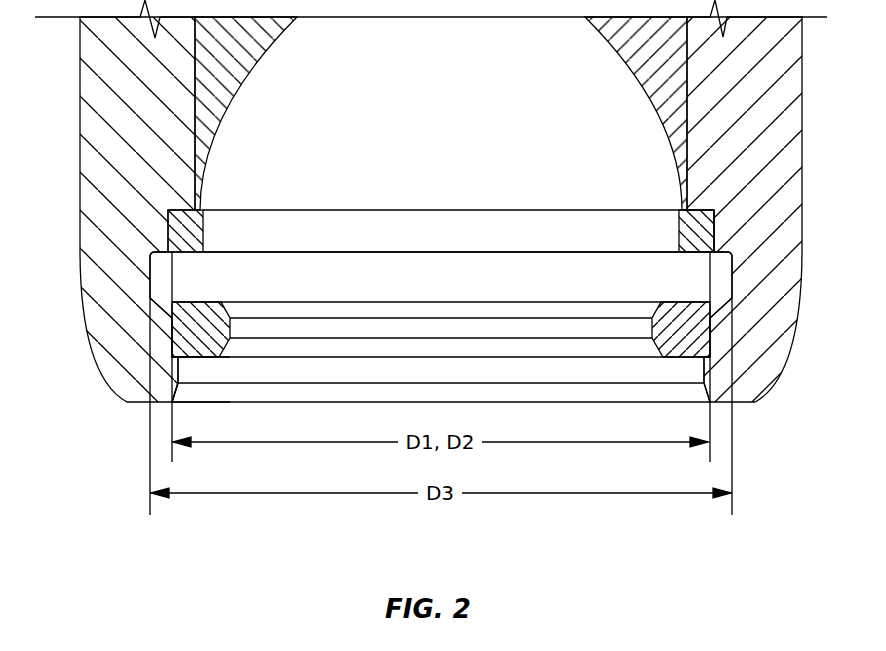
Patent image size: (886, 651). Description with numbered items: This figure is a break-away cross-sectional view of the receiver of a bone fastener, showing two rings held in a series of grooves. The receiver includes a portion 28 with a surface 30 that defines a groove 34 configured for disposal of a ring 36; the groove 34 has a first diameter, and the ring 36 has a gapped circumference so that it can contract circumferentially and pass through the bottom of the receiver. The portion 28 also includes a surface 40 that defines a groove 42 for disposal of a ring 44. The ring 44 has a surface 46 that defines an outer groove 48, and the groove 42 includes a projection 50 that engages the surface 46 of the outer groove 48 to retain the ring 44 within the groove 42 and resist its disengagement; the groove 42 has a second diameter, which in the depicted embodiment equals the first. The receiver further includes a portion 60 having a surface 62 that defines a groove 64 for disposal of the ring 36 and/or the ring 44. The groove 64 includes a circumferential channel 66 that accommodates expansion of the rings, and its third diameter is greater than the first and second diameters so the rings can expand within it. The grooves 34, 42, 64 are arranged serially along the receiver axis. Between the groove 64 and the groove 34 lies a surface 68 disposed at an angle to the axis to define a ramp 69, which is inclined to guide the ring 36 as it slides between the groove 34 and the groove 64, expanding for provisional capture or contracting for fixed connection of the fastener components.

The portion 28 is at (150, 232).
The ring 44 is at (697, 205).
The surface 46 is at (709, 212).
The outer groove 48 is at (713, 230).
The surface 40 is at (714, 235).
The projection 50 is at (712, 237).
The groove 42 is at (712, 241).
The portion 60 is at (740, 285).
The circumferential channel 66 is at (723, 277).
The surface 62 is at (738, 283).
The groove 64 is at (733, 290).
The surface 68 is at (167, 323).
The ramp 69 is at (163, 333).
The groove 34 is at (163, 352).
The surface 30 is at (167, 355).
The ring 36 is at (157, 374).